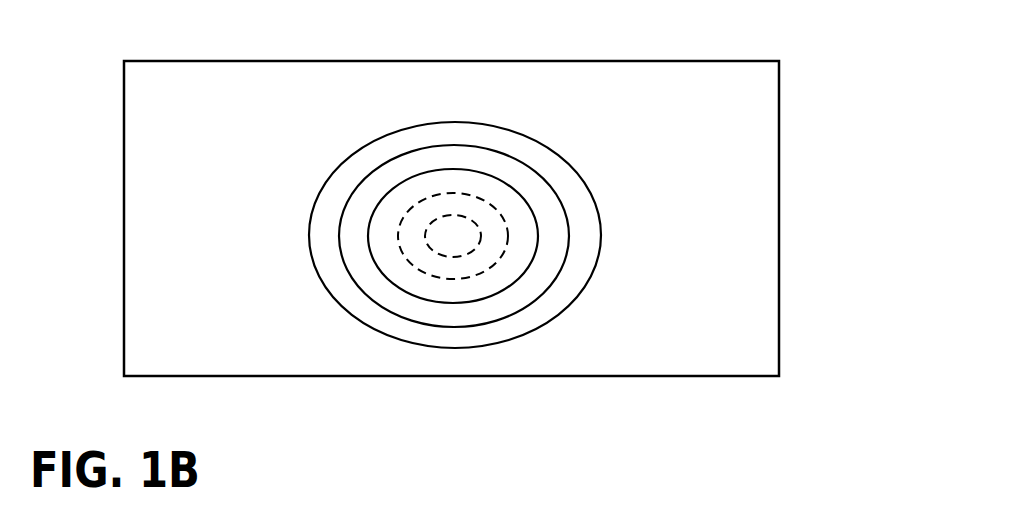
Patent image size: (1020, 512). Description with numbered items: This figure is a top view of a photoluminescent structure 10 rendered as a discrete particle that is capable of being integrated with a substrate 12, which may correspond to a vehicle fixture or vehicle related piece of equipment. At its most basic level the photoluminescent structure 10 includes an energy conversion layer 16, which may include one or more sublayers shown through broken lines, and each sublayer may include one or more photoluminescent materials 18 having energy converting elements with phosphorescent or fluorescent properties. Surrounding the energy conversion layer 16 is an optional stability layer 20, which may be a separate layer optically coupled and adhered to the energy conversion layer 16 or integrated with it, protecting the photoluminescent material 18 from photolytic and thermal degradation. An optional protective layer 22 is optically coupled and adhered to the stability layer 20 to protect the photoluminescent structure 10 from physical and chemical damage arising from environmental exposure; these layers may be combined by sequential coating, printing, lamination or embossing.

The photoluminescent structure 10 is at (355, 129).
The substrate 12 is at (779, 169).
The energy conversion layer 16 is at (512, 285).
The photoluminescent material 18 is at (437, 253).
The stability layer 20 is at (520, 160).
The protective layer 22 is at (492, 124).